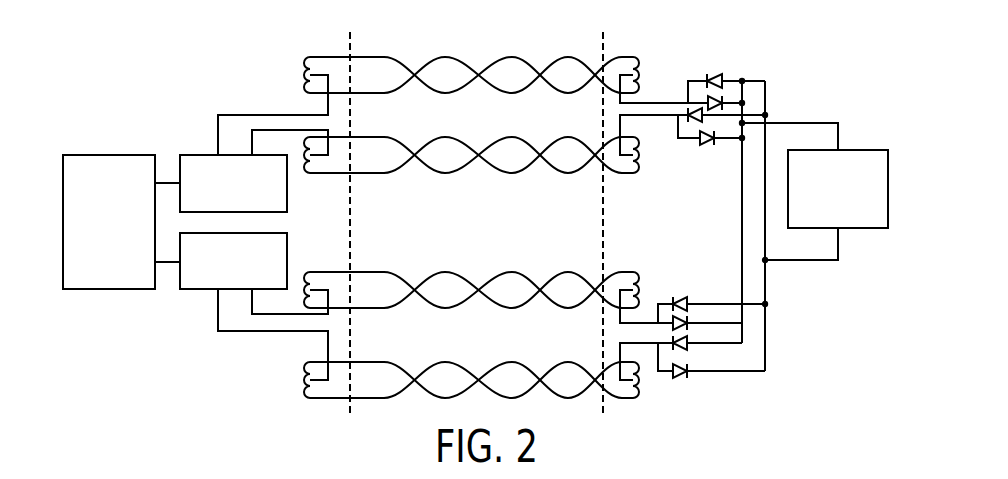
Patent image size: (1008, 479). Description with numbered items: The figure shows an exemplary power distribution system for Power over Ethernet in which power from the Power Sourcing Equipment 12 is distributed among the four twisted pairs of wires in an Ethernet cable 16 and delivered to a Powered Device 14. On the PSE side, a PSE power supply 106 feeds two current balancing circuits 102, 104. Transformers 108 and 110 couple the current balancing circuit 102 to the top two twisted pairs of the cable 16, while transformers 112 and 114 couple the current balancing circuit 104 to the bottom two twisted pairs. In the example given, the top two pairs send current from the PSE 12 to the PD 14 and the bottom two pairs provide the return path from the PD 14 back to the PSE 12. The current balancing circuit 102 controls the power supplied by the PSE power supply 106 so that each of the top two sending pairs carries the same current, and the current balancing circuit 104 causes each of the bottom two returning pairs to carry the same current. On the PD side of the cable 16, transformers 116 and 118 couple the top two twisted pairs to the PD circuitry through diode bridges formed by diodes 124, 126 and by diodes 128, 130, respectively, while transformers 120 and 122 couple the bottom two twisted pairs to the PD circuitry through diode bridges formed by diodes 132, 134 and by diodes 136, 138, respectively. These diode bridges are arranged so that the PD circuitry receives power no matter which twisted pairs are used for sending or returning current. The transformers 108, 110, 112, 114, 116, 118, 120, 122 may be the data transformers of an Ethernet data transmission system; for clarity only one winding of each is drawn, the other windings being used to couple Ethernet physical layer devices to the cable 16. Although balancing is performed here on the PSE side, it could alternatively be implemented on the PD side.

The Power Sourcing Equipment 12 is at (56, 106).
The Powered Device 14 is at (843, 78).
The Ethernet cable 16 is at (498, 38).
The current balancing circuit 102 is at (197, 155).
The current balancing circuit 104 is at (205, 290).
The PSE power supply 106 is at (107, 155).
The transformer 108 is at (315, 56).
The transformer 110 is at (333, 175).
The transformer 112 is at (315, 271).
The transformer 114 is at (340, 361).
The transformer 116 is at (625, 56).
The transformer 118 is at (625, 174).
The transformer 120 is at (625, 272).
The transformer 122 is at (622, 399).
The diode 124 is at (713, 77).
The diode 126 is at (717, 99).
The diode 128 is at (693, 121).
The diode 130 is at (707, 146).
The diode 132 is at (677, 300).
The diode 134 is at (687, 333).
The diode 136 is at (686, 348).
The diode 138 is at (680, 378).